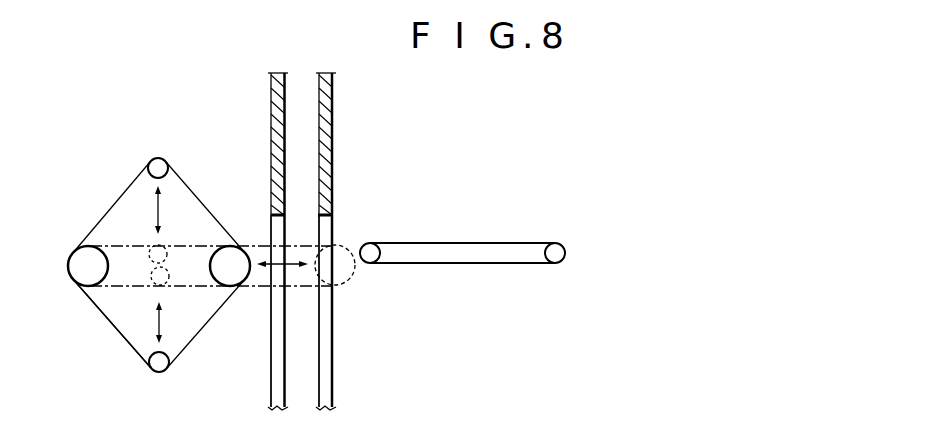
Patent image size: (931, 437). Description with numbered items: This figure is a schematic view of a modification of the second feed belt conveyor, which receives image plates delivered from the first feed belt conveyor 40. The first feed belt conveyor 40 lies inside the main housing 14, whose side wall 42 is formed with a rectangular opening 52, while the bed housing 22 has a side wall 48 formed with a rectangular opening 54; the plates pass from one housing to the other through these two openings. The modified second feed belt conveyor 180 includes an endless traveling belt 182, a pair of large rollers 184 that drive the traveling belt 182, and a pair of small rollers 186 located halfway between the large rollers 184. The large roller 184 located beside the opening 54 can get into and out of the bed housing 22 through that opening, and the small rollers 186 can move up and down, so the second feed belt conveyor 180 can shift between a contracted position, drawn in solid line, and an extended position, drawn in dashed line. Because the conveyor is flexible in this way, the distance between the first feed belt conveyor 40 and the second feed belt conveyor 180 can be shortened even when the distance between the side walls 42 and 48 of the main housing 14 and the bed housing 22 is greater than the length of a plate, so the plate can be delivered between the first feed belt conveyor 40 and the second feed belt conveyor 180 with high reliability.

The main housing 14 is at (362, 241).
The bed housing 22 is at (242, 241).
The first feed belt conveyor 40 is at (474, 243).
The side wall 42 is at (329, 148).
The side wall 48 is at (272, 157).
The rectangular opening 52 is at (332, 350).
The rectangular opening 54 is at (272, 347).
The second feed belt conveyor 180 is at (118, 184).
The endless traveling belt 182 is at (130, 346).
The large rollers 184 is at (80, 263).
The small rollers 186 is at (157, 158).